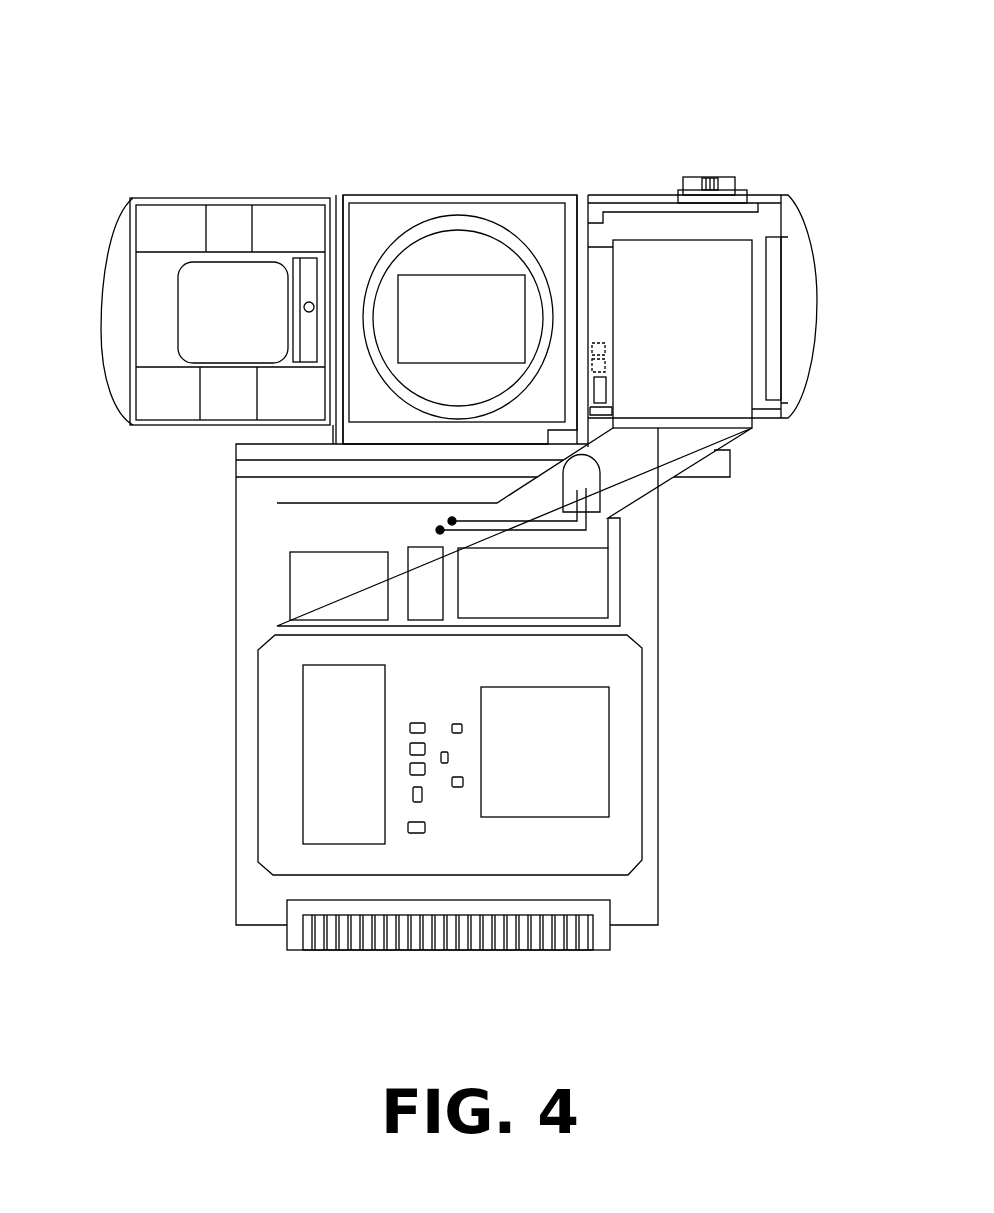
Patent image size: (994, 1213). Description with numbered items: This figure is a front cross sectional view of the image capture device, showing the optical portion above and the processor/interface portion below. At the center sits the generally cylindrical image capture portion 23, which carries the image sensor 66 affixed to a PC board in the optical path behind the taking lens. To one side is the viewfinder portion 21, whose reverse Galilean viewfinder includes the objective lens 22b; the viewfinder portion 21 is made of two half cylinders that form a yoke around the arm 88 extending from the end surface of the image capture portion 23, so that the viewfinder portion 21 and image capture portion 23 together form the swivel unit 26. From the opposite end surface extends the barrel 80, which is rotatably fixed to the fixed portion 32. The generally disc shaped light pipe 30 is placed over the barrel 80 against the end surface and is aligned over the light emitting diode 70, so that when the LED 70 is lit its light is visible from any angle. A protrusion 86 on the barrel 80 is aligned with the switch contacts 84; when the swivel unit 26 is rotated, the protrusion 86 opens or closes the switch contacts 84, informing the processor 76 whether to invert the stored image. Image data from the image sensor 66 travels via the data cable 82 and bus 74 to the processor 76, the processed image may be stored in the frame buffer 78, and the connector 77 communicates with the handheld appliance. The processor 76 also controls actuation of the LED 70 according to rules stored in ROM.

The swivel unit 26 is at (572, 100).
The viewfinder portion 21 is at (160, 198).
The objective lens 22b is at (176, 282).
The arm 88 is at (333, 273).
The image capture portion 23 is at (492, 195).
The image sensor 66 is at (405, 272).
The light pipe 30 is at (584, 195).
The fixed portion 32 is at (637, 195).
The barrel 80 is at (765, 193).
The data cable 82 is at (752, 270).
The switch contacts 84 is at (606, 358).
The protrusion 86 is at (607, 387).
The light emitting diode (LED) 70 is at (593, 472).
The bus 74 is at (514, 527).
The processor 76 is at (545, 752).
The frame buffer 78 is at (344, 754).
The connector 77 is at (590, 952).